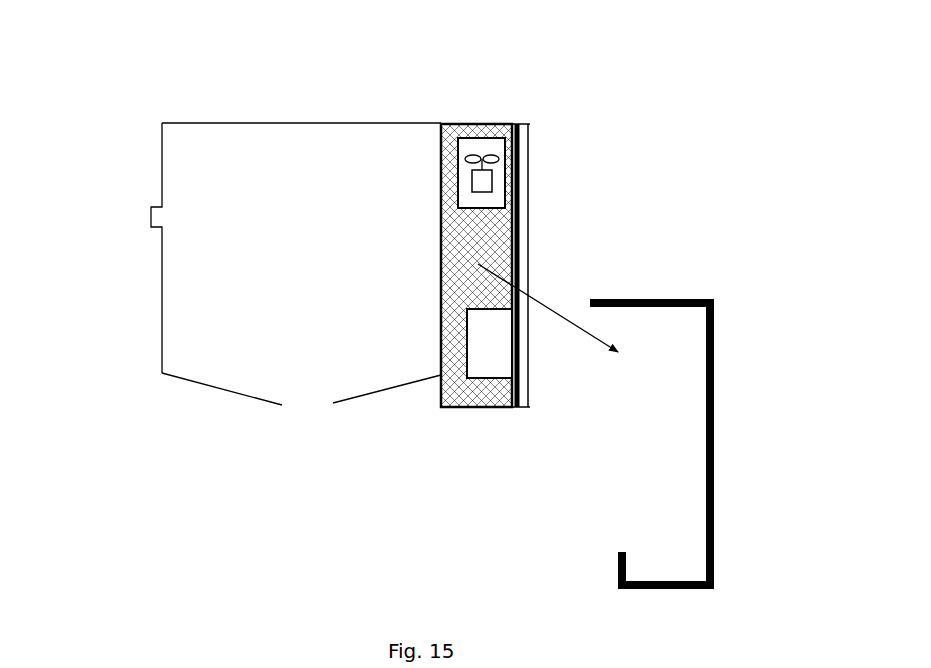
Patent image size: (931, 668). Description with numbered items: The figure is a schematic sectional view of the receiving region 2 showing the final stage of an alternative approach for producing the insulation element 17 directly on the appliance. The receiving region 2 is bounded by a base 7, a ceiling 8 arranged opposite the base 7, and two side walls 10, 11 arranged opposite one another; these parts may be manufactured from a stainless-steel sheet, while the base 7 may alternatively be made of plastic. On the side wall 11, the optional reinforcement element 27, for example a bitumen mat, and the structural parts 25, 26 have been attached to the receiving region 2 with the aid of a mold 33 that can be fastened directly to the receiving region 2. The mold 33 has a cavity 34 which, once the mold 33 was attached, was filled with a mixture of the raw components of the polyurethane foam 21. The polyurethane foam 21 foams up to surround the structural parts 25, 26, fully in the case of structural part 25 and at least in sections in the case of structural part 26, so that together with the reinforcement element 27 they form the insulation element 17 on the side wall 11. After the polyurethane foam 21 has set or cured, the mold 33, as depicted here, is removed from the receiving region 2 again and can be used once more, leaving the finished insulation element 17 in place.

The receiving region 2 is at (303, 84).
The base 7 is at (228, 393).
The ceiling 8 is at (217, 123).
The side wall 10 is at (162, 243).
The side wall 11 is at (441, 253).
The insulation element 17 is at (550, 167).
The polyurethane foam 21 is at (503, 235).
The structural part 25 is at (480, 124).
The structural part 26 is at (497, 379).
The reinforcement element 27 is at (530, 278).
The mold 33 is at (712, 455).
The cavity 34 is at (680, 501).